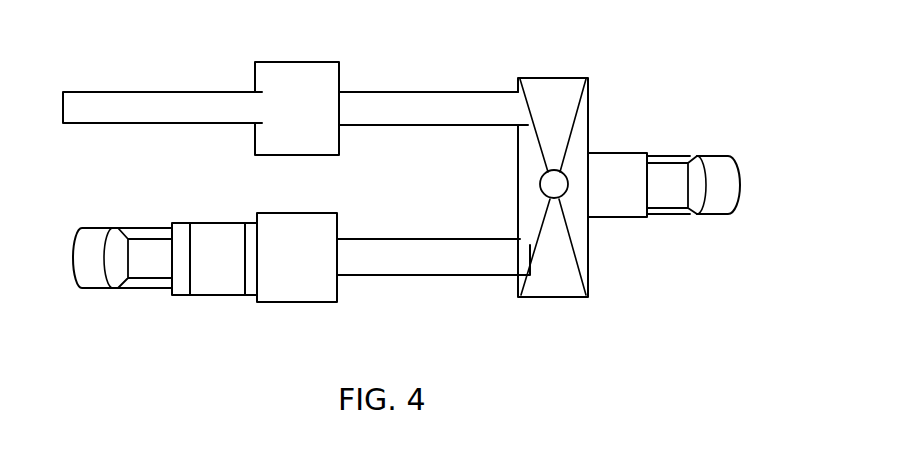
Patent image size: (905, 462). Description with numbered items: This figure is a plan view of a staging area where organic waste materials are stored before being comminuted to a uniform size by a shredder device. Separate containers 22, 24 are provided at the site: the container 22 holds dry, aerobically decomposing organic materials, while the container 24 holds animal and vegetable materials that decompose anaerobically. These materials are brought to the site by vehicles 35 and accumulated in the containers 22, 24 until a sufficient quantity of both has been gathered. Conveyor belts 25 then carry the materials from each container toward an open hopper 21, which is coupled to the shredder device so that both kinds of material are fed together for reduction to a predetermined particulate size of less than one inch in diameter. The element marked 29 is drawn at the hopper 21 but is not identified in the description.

The open hopper 21 is at (560, 97).
The container 22 is at (305, 83).
The container 24 is at (320, 240).
The conveyor belts 25 is at (162, 114).
The pivot ball 29 is at (563, 172).
The vehicles 35 is at (717, 175).